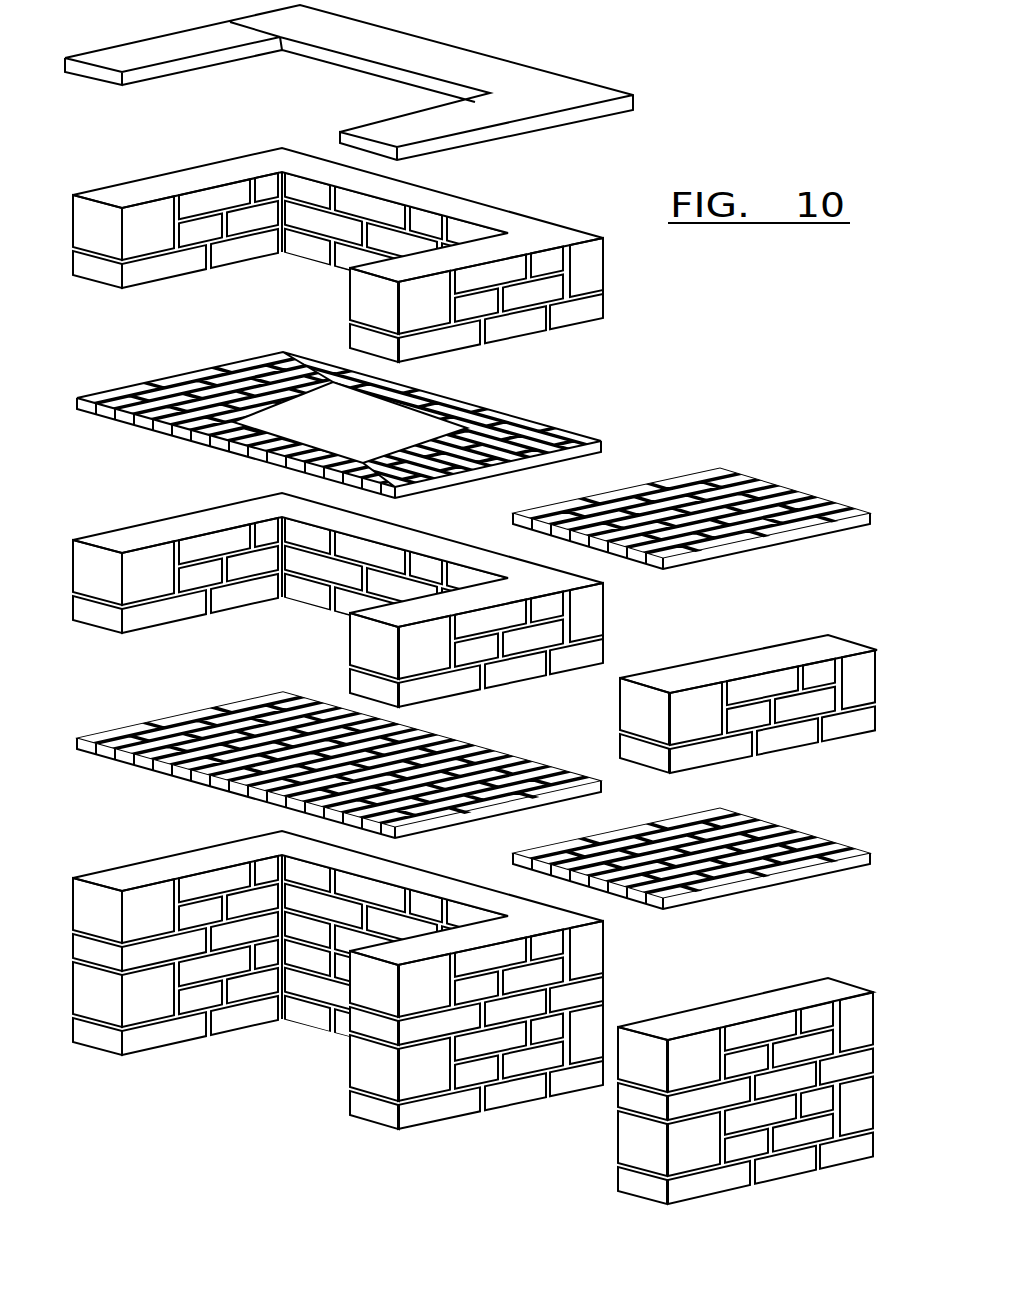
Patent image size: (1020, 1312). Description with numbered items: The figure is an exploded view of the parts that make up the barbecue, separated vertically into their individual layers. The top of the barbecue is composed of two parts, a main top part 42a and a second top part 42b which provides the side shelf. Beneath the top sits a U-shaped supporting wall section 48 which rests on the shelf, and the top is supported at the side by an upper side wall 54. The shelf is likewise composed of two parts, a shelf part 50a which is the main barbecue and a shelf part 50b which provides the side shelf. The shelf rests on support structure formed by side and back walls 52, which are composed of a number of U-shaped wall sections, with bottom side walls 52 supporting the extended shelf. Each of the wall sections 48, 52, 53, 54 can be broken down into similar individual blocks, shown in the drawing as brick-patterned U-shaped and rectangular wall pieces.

The top part 42a is at (503, 412).
The top part 42b is at (810, 494).
The U-shaped supporting wall section 48 is at (174, 612).
The shelf part 50a is at (476, 748).
The shelf part 50b is at (788, 819).
The side and back walls 52 is at (365, 1113).
The wall section 53 is at (862, 1010).
The upper side wall 54 is at (867, 677).